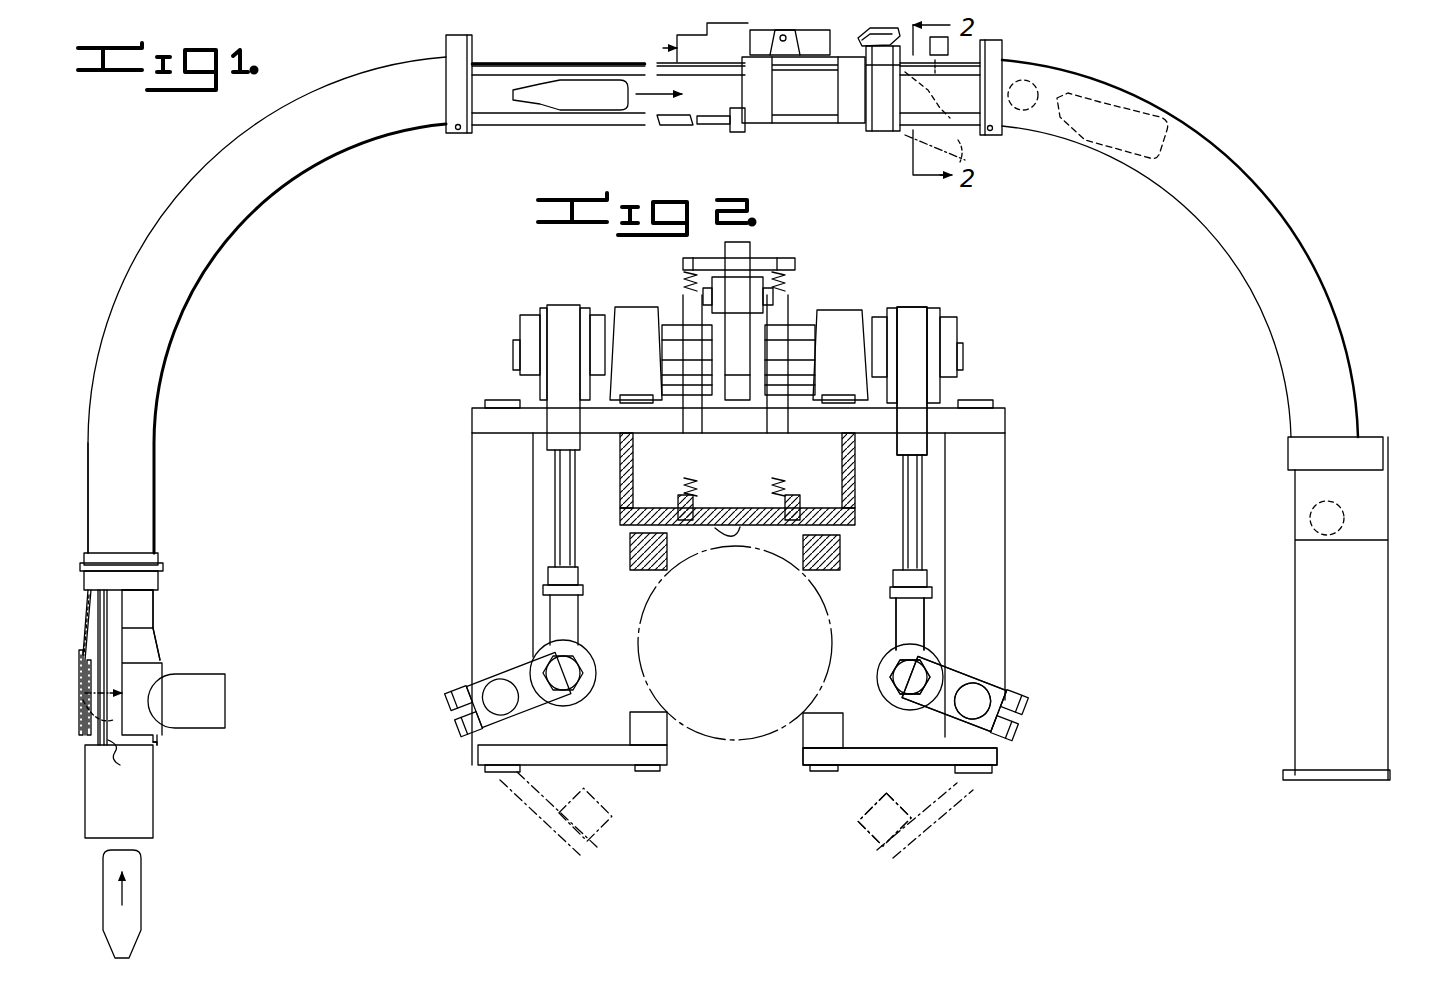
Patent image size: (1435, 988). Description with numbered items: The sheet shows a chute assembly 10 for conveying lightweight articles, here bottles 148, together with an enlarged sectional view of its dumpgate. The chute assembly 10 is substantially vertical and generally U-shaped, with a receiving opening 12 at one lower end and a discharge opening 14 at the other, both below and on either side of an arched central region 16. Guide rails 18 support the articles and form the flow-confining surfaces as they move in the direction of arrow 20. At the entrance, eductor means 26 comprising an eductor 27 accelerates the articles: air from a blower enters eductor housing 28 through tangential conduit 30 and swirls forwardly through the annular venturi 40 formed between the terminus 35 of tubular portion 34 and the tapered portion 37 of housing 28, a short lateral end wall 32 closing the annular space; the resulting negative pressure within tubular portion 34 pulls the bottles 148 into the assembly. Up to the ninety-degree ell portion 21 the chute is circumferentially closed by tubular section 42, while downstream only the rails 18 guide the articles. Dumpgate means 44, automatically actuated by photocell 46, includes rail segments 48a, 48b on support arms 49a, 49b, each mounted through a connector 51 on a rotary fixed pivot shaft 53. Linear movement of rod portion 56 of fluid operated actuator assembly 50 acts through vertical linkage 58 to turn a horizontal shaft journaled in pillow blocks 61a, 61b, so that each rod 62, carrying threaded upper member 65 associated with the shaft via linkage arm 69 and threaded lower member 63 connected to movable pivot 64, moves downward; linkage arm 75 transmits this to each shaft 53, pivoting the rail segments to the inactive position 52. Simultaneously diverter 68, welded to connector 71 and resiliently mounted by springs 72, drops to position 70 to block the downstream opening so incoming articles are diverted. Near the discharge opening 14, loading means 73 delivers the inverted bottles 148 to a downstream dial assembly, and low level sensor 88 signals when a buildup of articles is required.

In FIG. 1, the chute assembly 10 is at (292, 672).
In FIG. 1, the receiving opening 12 is at (150, 852).
In FIG. 1, the discharge opening 14 is at (1335, 807).
In FIG. 1, the arched central region 16 is at (717, 140).
In FIG. 1, the guide rails 18 is at (512, 125).
In FIG. 1, the arrow 20 is at (176, 245).
In FIG. 1, the ell portion 21 is at (293, 198).
In FIG. 1, the eductor means 26 is at (208, 648).
In FIG. 1, the eductor 27 is at (175, 661).
In FIG. 1, the eductor housing 28 is at (160, 735).
In FIG. 1, the tangential conduit 30 is at (218, 711).
In FIG. 1, the lateral end wall 32 is at (84, 740).
In FIG. 1, the tubular portion 34 is at (148, 806).
In FIG. 1, the terminus of tubular portion 35 is at (85, 660).
In FIG. 1, the tapered portion 37 is at (160, 645).
In FIG. 1, the annular venturi 40 is at (88, 648).
In FIG. 1, the tubular section 42 is at (157, 465).
In FIG. 1, the dumpgate means 44 is at (856, 140).
In FIG. 1, the photocell 46 is at (1030, 112).
In FIG. 2, the rail segment 48a is at (657, 735).
In FIG. 2, the rail segment 48b is at (803, 742).
In FIG. 2, the support arm 49a is at (575, 757).
In FIG. 2, the support arm 49b is at (867, 760).
In FIG. 1, the fluid operated actuator assembly 50 is at (748, 36).
In FIG. 2, the connector 51 is at (980, 748).
In FIG. 2, the inactive position 52 is at (915, 855).
In FIG. 2, the fixed pivot shaft 53 is at (985, 702).
In FIG. 1, the rod portion 56 is at (835, 52).
In FIG. 2, the vertical linkage 58 is at (740, 270).
In FIG. 2, the pillow block 61a is at (640, 312).
In FIG. 2, the pillow block 61b is at (843, 322).
In FIG. 2, the rod 62 is at (925, 518).
In FIG. 2, the threaded lower member 63 is at (918, 635).
In FIG. 2, the movable pivot 64 is at (920, 676).
In FIG. 2, the threaded upper member 65 is at (920, 393).
In FIG. 1, the diverter 68 is at (950, 60).
In FIG. 2, the diverter 68 is at (732, 535).
In FIG. 1, the linkage arm 69 is at (868, 70).
In FIG. 1, the diverter lowered position 70 is at (928, 108).
In FIG. 2, the connector 71 is at (748, 463).
In FIG. 2, the springs 72 is at (695, 487).
In FIG. 1, the loading means 73 is at (1385, 665).
In FIG. 2, the linkage arm 75 is at (940, 702).
In FIG. 1, the low level sensor 88 is at (1310, 525).
In FIG. 1, the bottles 148 is at (1148, 108).
In FIG. 2, the bottles 148 is at (735, 730).